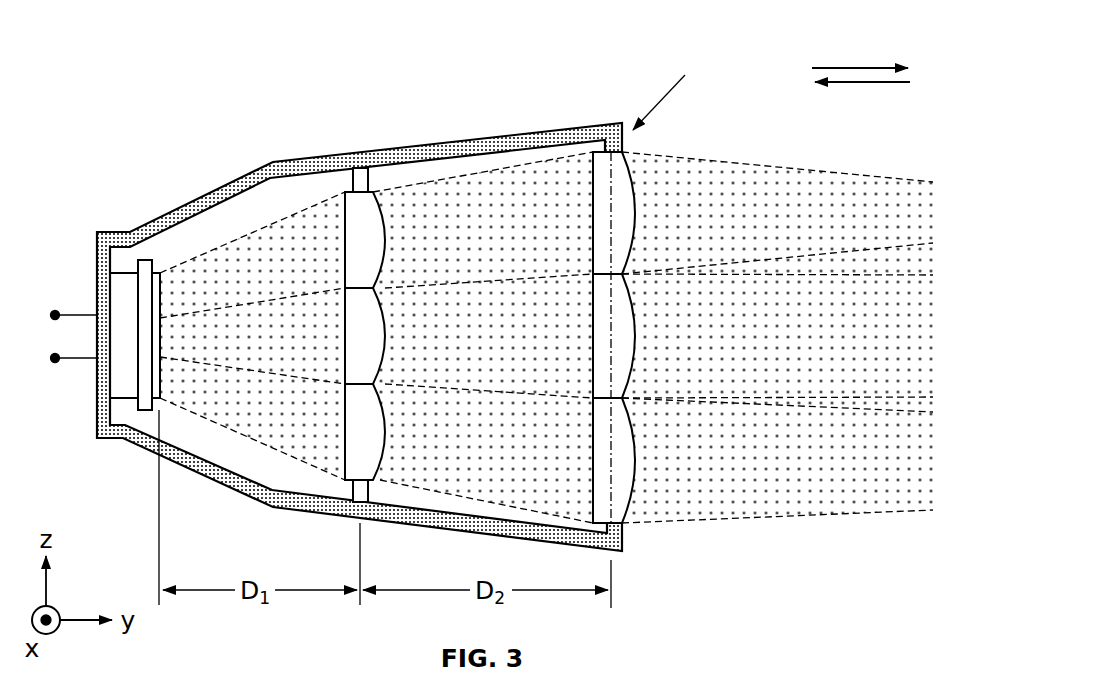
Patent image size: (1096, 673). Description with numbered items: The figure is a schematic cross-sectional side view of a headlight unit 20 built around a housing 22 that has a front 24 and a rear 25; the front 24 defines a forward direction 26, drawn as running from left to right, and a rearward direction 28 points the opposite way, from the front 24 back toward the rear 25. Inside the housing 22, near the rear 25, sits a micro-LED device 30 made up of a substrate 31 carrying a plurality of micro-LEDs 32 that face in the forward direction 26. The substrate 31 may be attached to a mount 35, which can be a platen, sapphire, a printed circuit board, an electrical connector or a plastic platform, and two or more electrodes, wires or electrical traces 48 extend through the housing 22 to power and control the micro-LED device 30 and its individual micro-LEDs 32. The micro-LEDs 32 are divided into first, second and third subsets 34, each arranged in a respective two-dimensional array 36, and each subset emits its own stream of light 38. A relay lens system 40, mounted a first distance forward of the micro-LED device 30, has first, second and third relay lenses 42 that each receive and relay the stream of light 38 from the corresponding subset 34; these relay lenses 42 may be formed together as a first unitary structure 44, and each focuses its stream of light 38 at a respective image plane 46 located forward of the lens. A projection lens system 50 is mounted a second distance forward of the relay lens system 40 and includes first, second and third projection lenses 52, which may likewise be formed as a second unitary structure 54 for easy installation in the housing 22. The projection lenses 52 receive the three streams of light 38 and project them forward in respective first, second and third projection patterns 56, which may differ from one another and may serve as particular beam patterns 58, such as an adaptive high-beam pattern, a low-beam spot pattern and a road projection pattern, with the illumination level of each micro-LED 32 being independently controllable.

The headlight unit 20 is at (193, 118).
The housing 22 is at (318, 160).
The front 24 is at (600, 127).
The rear 25 is at (112, 240).
The forward direction 26 is at (870, 68).
The rearward direction 28 is at (852, 83).
The micro-LED device 30 is at (180, 245).
The substrate 31 is at (145, 412).
The micro-LEDs 32 is at (160, 385).
The subsets of micro-LEDs 34 is at (217, 335).
The mount 35 is at (122, 300).
The two-dimensional arrays 36 is at (160, 294).
The streams of light 38 is at (546, 337).
The relay lens system 40 is at (404, 283).
The relay lenses 42 is at (372, 232).
The first unitary structure 44 is at (372, 140).
The image planes 46 is at (616, 337).
The electrical traces 48 is at (55, 396).
The projection lens system 50 is at (696, 90).
The projection lenses 52 is at (611, 196).
The second unitary structure 54 is at (696, 90).
The projection patterns 56 is at (546, 337).
The beam patterns 58 is at (885, 224).